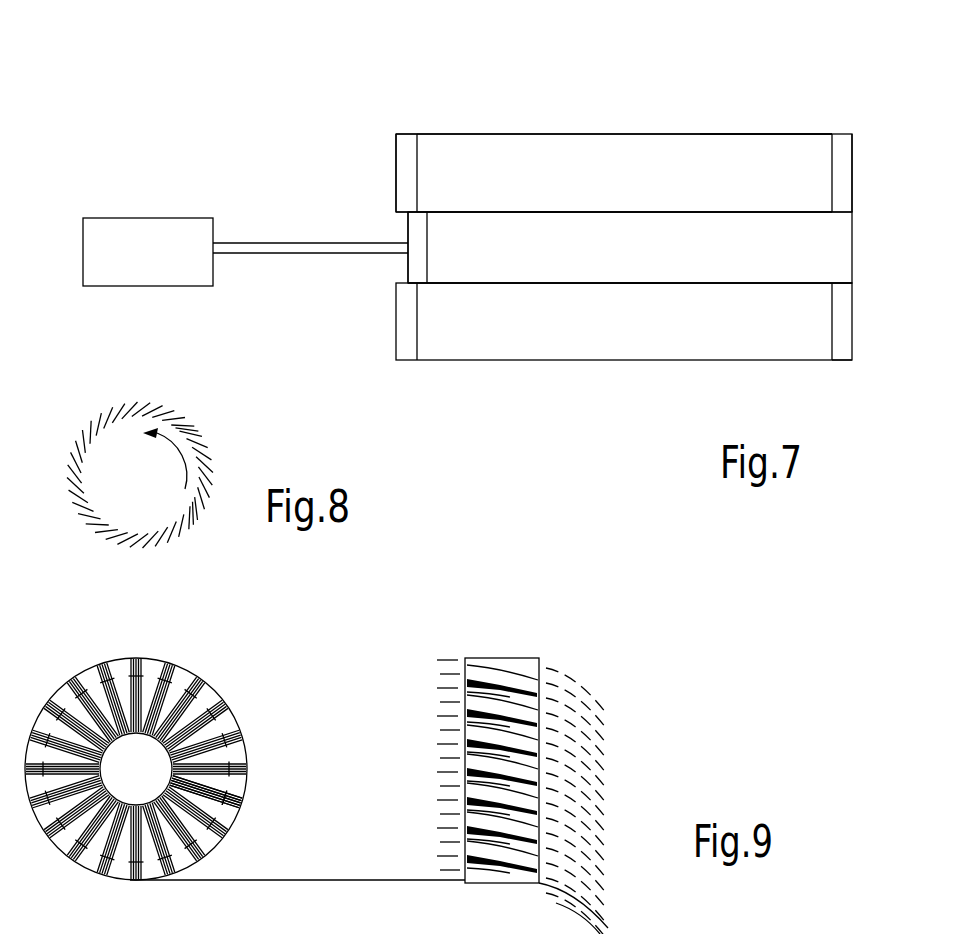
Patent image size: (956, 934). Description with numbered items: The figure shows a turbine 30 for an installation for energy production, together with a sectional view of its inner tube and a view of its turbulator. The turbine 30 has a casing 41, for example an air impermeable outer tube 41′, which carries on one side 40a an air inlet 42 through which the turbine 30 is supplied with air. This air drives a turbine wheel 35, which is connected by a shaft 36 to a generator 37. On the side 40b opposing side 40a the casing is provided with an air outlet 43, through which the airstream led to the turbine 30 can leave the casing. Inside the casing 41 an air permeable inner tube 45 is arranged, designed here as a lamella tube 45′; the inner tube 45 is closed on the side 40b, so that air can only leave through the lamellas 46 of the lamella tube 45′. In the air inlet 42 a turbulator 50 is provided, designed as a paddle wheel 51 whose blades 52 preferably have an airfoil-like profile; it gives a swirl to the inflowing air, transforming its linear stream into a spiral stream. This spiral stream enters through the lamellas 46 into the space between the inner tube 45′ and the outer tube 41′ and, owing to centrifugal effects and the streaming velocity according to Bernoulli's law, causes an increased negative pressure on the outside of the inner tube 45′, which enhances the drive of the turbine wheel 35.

In FIG. 7, the turbine 30 is at (544, 385).
In FIG. 7, the turbine wheel 35 is at (410, 258).
In FIG. 7, the drive shaft 36 is at (277, 249).
In FIG. 7, the generator 37 is at (157, 236).
In FIG. 7, the side of the casing 40a is at (403, 151).
In FIG. 7, the opposing side of the casing 40b is at (844, 142).
In FIG. 7, the casing 41 is at (680, 135).
In FIG. 7, the outer tube 41′ is at (745, 158).
In FIG. 7, the air inlet 42 is at (396, 177).
In FIG. 9, the air inlet 42 is at (540, 655).
In FIG. 7, the air outlet 43 is at (845, 310).
In FIG. 7, the inner tube 45 is at (541, 234).
In FIG. 8, the inner tube 45 is at (185, 418).
In FIG. 7, the lamella tube 45′ is at (642, 250).
In FIG. 8, the lamella tube 45′ is at (203, 515).
In FIG. 8, the lamellas 46 is at (146, 549).
In FIG. 9, the turbulator 50 is at (224, 667).
In FIG. 9, the paddle wheel 51 is at (250, 741).
In FIG. 9, the blades 52 is at (240, 800).